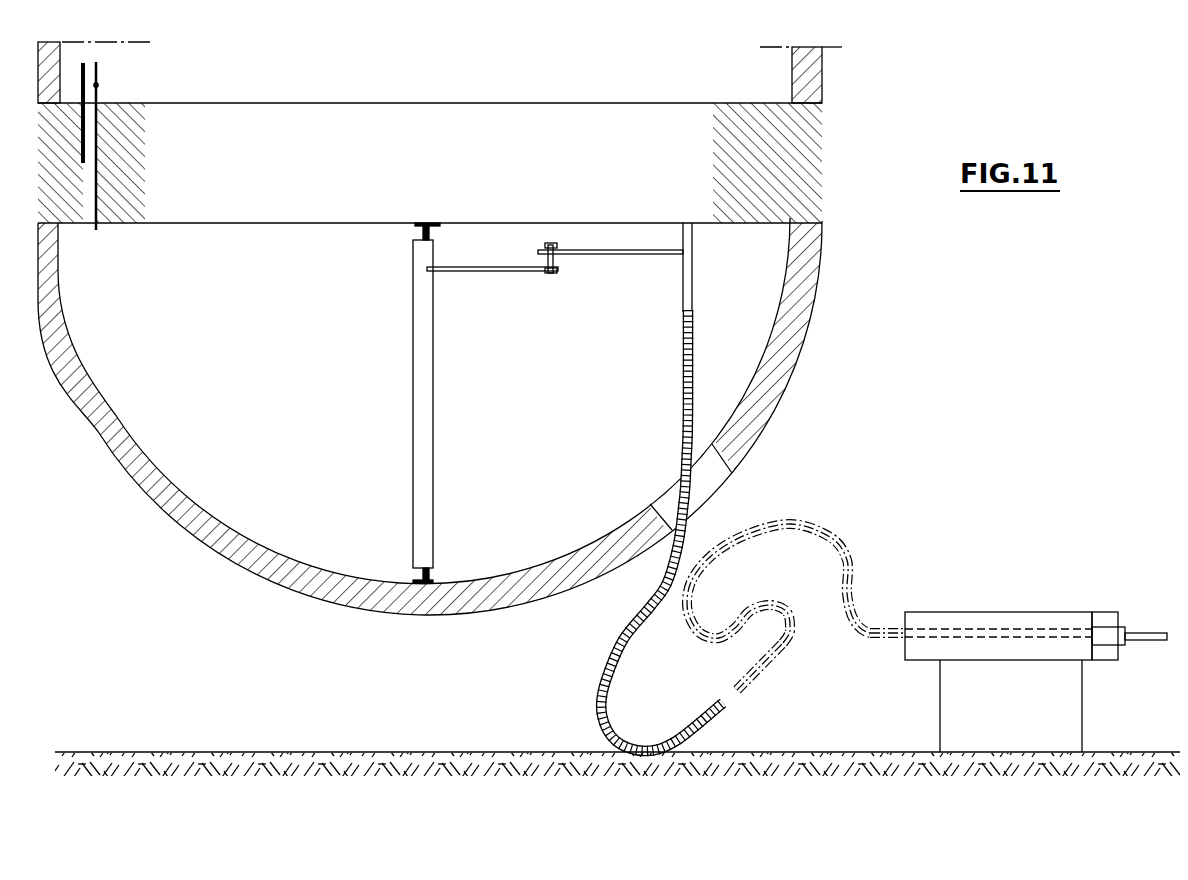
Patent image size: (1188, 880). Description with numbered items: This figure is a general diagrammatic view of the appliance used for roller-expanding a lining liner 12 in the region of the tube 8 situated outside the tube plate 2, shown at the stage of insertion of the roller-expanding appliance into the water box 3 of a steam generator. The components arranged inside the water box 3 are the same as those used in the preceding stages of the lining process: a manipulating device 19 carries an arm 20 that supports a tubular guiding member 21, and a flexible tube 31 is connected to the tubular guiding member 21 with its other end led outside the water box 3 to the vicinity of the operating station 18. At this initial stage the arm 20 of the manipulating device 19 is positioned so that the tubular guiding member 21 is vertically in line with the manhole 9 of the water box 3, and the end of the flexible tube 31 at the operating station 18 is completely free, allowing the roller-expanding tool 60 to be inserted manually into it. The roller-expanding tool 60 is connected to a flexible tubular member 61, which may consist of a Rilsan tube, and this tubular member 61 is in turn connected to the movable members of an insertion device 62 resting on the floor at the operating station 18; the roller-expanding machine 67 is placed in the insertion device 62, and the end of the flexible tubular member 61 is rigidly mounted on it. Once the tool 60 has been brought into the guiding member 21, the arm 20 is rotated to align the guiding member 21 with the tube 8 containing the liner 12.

The tube plate 2 is at (254, 128).
The water box 3 is at (454, 328).
The tube 8 is at (97, 170).
The manhole 9 is at (707, 482).
The liner 12 is at (90, 86).
The operating station 18 is at (870, 569).
The manipulating device 19 is at (413, 483).
The arm 20 is at (527, 272).
The tubular guiding member 21 is at (690, 305).
The flexible tube 31 is at (600, 662).
The roller-expanding tool 60 is at (748, 677).
The flexible tubular member 61 is at (872, 634).
The insertion device 62 is at (1015, 612).
The roller-expanding machine 67 is at (1115, 637).